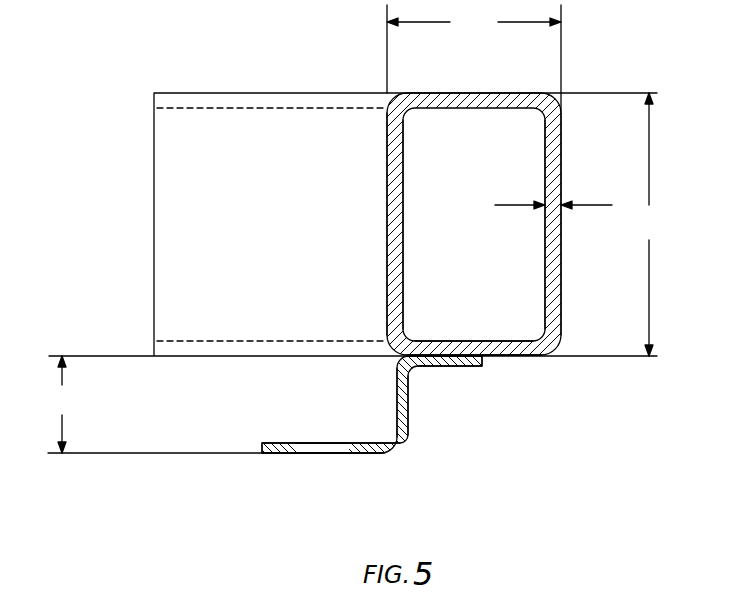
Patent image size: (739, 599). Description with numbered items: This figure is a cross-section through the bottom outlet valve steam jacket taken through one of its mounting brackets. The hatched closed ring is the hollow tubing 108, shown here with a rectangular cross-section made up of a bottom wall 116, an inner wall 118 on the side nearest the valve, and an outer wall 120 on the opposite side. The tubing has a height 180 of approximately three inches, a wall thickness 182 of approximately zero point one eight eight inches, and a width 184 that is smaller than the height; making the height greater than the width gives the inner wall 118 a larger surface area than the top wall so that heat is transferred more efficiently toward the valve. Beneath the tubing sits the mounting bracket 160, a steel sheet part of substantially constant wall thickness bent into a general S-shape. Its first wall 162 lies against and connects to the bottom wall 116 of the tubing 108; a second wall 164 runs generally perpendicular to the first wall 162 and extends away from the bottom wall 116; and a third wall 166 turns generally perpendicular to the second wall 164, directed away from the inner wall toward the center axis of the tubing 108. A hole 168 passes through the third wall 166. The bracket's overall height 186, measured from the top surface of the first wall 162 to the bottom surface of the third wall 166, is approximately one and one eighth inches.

The hollow tubing 108 is at (551, 93).
The bottom wall 116 is at (518, 358).
The inner wall 118 is at (387, 180).
The outer wall 120 is at (562, 172).
The mounting bracket 160 is at (407, 432).
The first wall 162 is at (443, 367).
The second wall 164 is at (397, 405).
The third wall 166 is at (371, 455).
The hole 168 is at (313, 452).
The height 180 is at (645, 224).
The wall thickness 182 is at (534, 207).
The width 184 is at (474, 58).
The overall height 186 is at (56, 404).